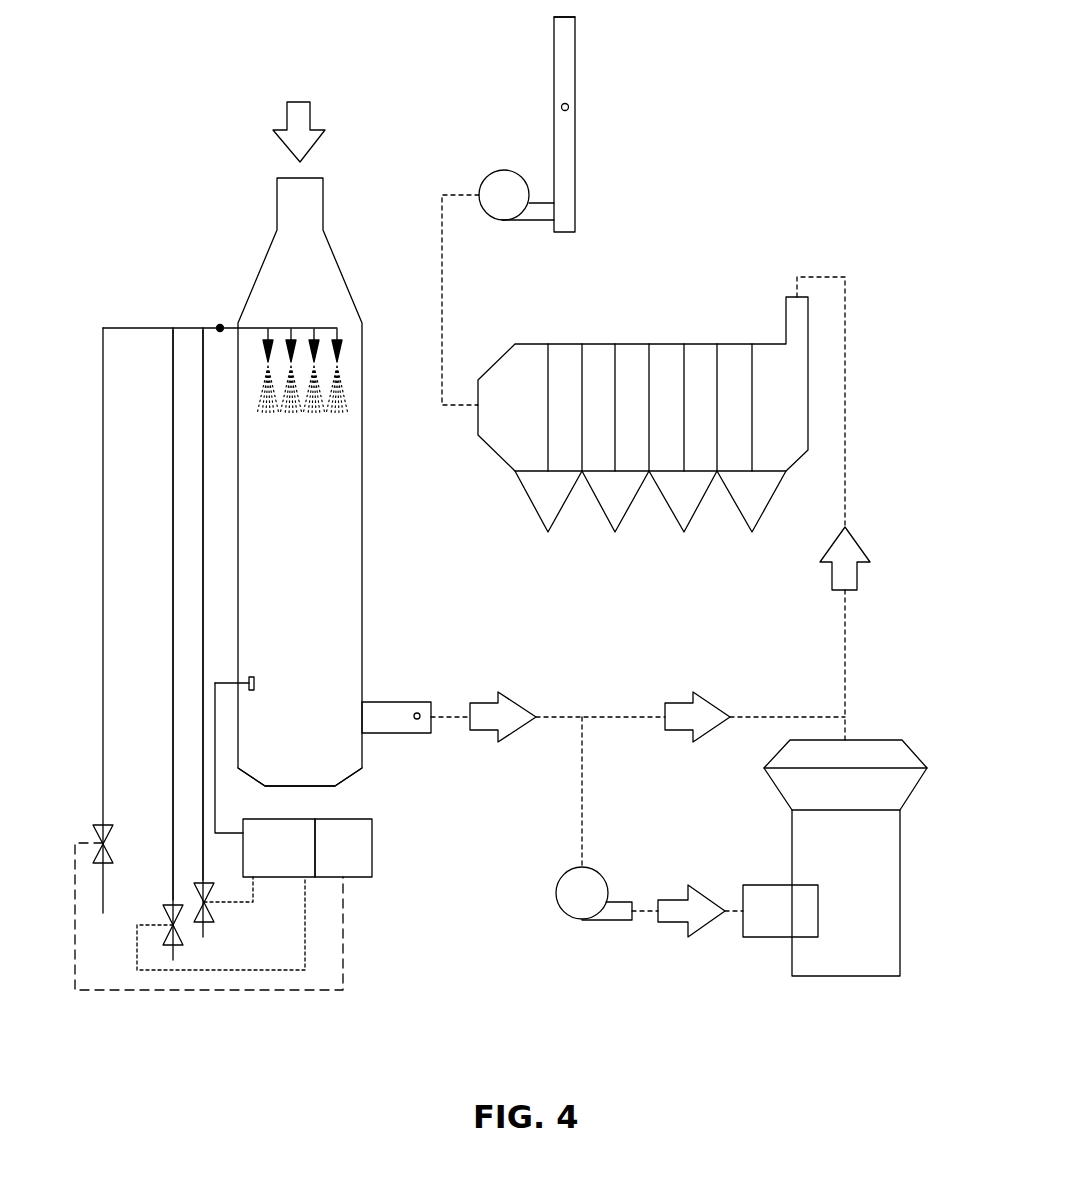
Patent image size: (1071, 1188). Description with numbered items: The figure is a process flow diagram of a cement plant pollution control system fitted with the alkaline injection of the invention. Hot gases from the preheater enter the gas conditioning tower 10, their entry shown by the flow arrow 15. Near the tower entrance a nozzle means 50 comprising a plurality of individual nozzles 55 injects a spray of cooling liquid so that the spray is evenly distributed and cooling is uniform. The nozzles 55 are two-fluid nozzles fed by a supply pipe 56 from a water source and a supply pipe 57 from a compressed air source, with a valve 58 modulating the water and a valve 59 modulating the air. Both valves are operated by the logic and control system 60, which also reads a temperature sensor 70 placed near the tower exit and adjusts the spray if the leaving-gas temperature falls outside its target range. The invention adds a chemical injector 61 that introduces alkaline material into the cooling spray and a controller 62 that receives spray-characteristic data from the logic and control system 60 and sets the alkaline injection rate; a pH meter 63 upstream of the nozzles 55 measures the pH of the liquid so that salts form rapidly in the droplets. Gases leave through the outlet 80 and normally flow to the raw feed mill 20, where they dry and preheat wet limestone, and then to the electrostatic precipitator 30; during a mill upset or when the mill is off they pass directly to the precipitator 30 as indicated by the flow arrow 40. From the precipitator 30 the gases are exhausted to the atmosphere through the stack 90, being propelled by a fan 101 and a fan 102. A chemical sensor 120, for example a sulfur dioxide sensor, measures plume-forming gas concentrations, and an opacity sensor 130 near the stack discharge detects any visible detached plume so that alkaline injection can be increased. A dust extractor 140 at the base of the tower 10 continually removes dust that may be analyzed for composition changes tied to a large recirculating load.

The gas conditioning tower 10 is at (315, 552).
The flow arrow 15 is at (312, 110).
The raw feed mill 20 is at (857, 863).
The electrostatic precipitator 30 is at (633, 345).
The flow arrow 40 is at (710, 703).
The nozzle means 50 is at (302, 326).
The individual nozzles 55 is at (342, 350).
The supply pipe 56 is at (173, 695).
The supply pipe 57 is at (203, 457).
The valve 58 is at (170, 924).
The valve 59 is at (206, 905).
The logic and control system 60 is at (292, 858).
The chemical injector 61 is at (106, 840).
The controller 62 is at (357, 858).
The pH meter 63 is at (219, 325).
The temperature sensor 70 is at (255, 683).
The outlet 80 is at (385, 726).
The stack 90 is at (578, 177).
The fan 101 is at (490, 171).
The fan 102 is at (565, 912).
The chemical sensor 120 is at (417, 712).
The opacity sensor 130 is at (578, 37).
The dust extractor 140 is at (315, 787).